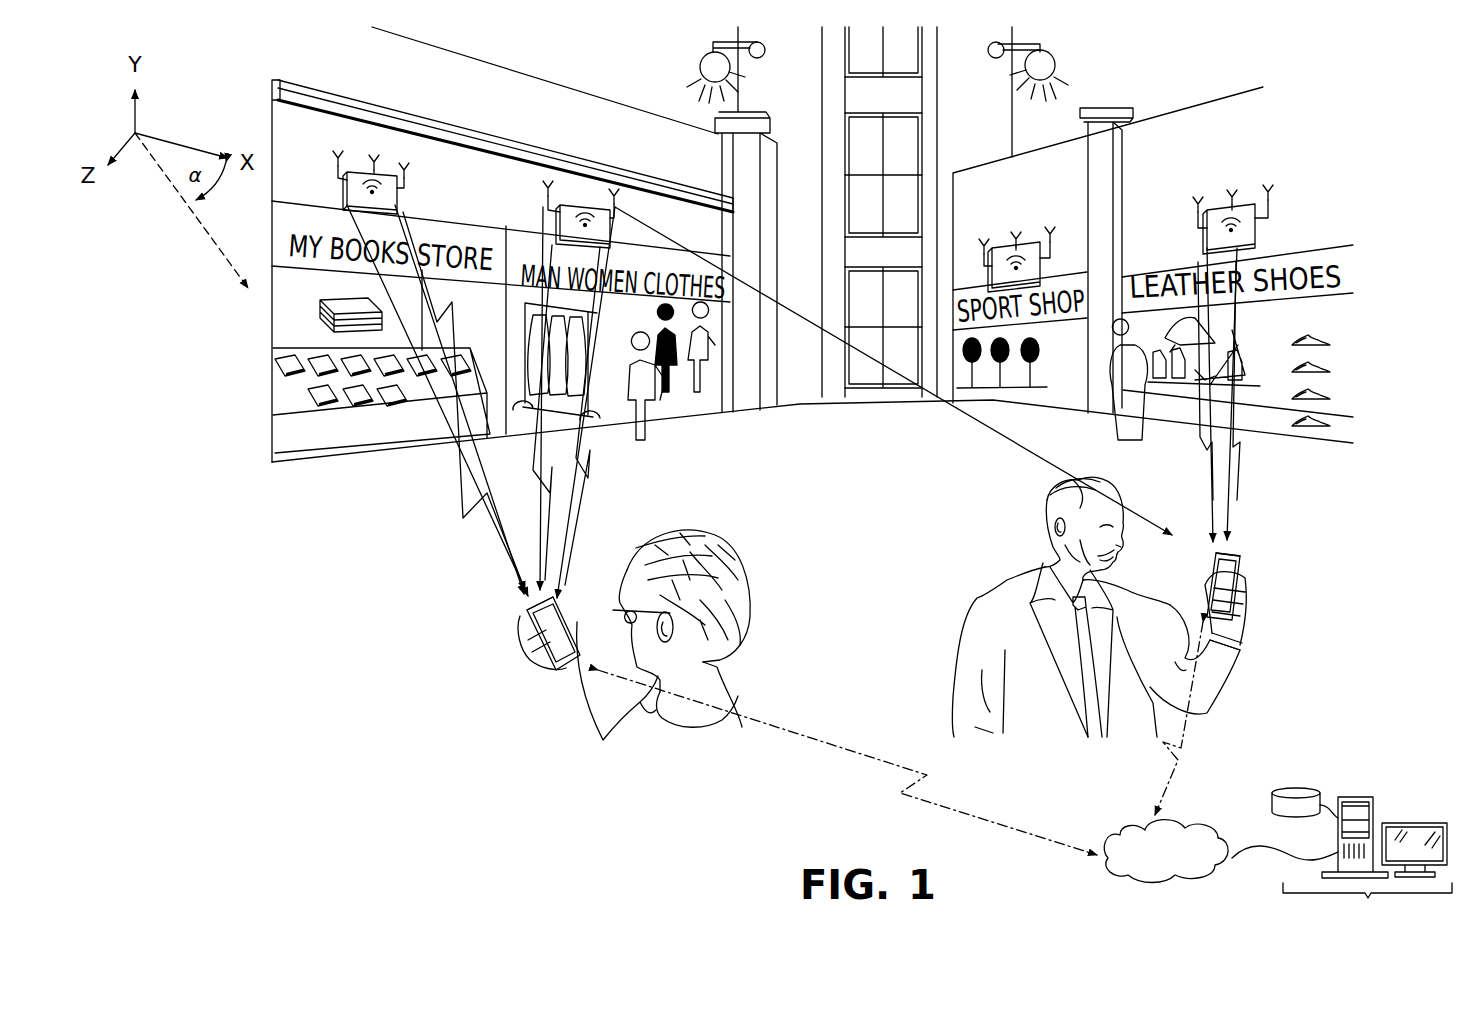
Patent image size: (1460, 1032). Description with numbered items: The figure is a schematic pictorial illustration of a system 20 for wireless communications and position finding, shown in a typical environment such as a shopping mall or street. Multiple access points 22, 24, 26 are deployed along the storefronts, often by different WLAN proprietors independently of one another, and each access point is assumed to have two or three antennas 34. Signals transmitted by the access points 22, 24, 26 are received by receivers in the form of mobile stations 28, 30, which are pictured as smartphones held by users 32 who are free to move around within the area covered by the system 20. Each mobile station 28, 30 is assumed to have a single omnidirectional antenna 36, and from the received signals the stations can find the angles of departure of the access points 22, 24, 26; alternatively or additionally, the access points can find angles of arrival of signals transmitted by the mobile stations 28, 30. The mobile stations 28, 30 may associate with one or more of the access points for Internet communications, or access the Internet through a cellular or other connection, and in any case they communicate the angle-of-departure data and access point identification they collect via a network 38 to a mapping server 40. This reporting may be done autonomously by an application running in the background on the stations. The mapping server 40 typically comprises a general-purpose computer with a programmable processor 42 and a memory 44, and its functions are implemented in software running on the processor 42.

The system 20 is at (1320, 97).
The access point 22 is at (386, 172).
The access point 24 is at (562, 205).
The access point 26 is at (1257, 228).
The mobile station 28 is at (1214, 560).
The mobile station 30 is at (556, 600).
The user 32 is at (738, 696).
The antenna 34 is at (1272, 153).
The omnidirectional antenna 36 is at (520, 612).
The network 38 is at (1215, 872).
The mapping server 40 is at (1332, 857).
The programmable processor 42 is at (1377, 805).
The memory 44 is at (1272, 803).